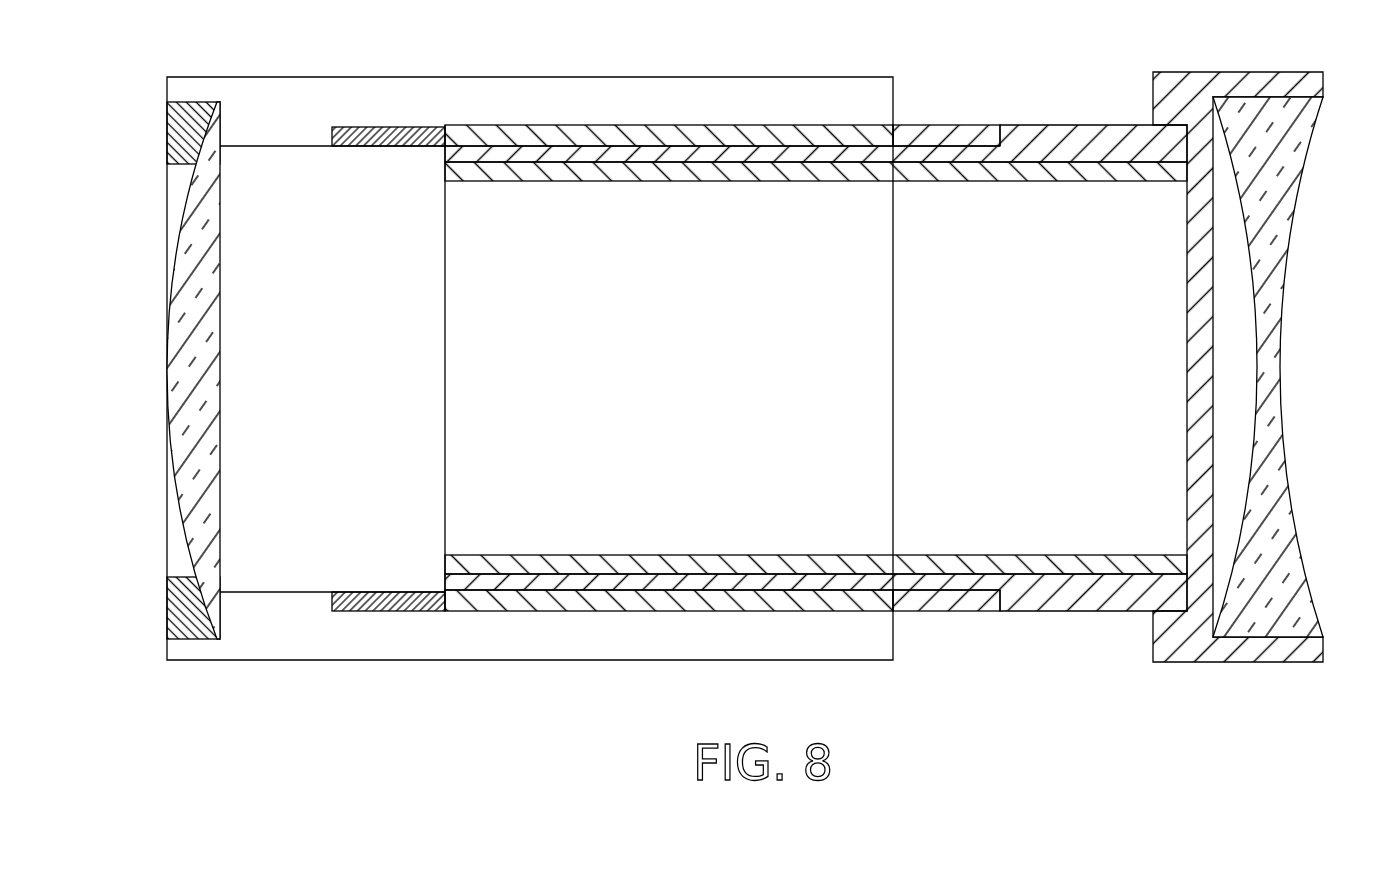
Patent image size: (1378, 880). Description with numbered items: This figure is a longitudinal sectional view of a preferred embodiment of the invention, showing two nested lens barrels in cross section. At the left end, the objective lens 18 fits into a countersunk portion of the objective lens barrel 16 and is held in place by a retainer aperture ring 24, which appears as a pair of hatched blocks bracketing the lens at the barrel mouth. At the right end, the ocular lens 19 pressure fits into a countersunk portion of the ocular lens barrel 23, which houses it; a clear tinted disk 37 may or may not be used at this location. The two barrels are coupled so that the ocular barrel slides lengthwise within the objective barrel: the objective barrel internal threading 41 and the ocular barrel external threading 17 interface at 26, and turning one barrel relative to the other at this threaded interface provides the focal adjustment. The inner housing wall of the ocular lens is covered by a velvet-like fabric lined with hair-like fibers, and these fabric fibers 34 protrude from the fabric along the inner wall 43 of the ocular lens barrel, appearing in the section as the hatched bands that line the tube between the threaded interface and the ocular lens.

The objective lens barrel 16 is at (474, 92).
The ocular barrel external threading 17 is at (947, 125).
The objective lens 18 is at (181, 514).
The ocular lens 19 is at (1305, 162).
The ocular lens barrel 23 is at (1202, 72).
The retainer aperture ring 24 is at (167, 134).
The threading interface 26 is at (643, 125).
The fabric fibers 34 is at (1082, 575).
The clear tinted disk 37 is at (1198, 640).
The objective barrel internal threading 41 is at (357, 127).
The inner wall of the ocular lens barrel 43 is at (1077, 158).